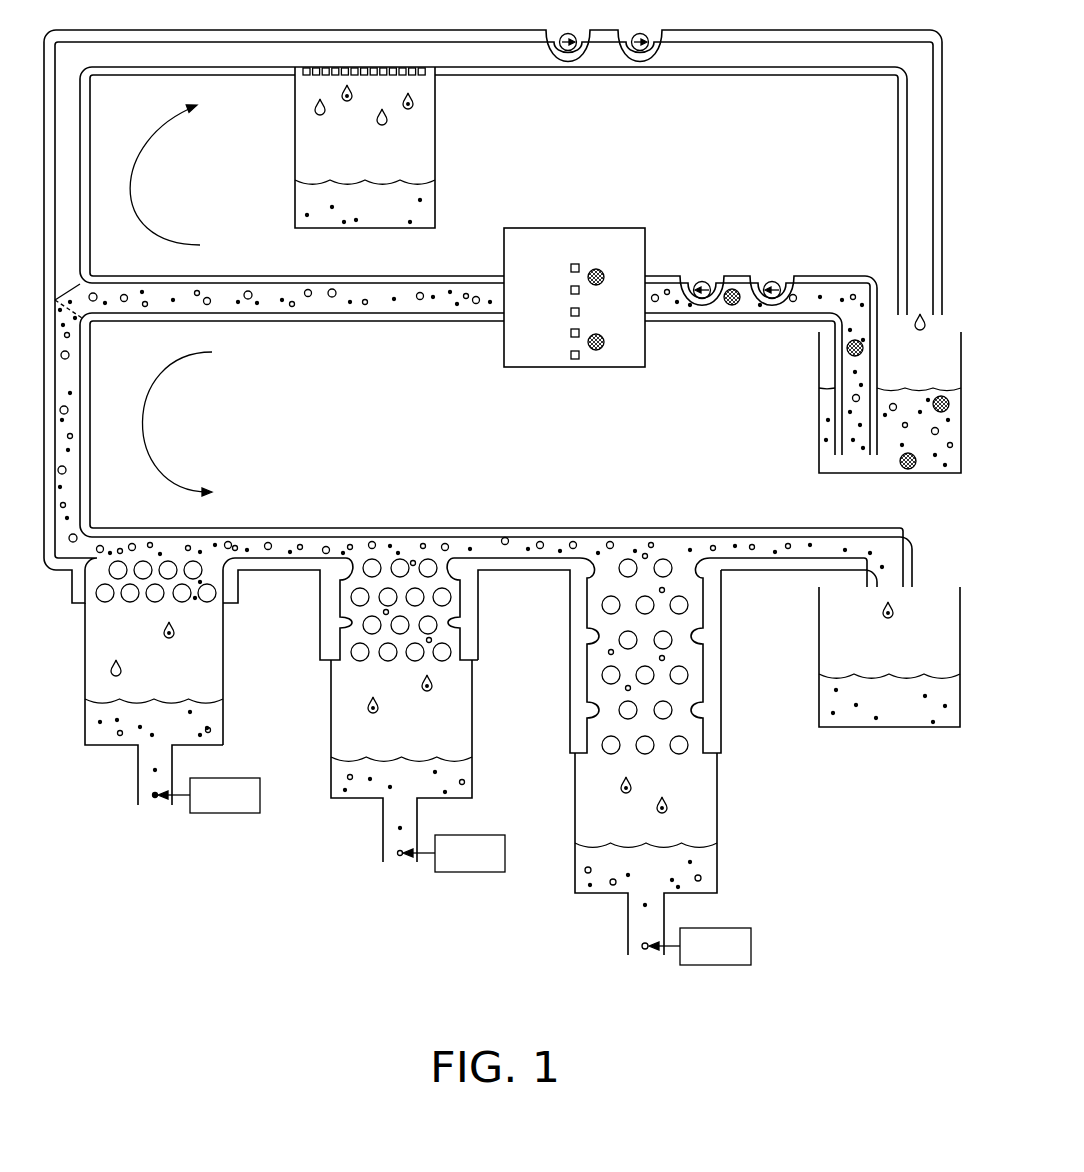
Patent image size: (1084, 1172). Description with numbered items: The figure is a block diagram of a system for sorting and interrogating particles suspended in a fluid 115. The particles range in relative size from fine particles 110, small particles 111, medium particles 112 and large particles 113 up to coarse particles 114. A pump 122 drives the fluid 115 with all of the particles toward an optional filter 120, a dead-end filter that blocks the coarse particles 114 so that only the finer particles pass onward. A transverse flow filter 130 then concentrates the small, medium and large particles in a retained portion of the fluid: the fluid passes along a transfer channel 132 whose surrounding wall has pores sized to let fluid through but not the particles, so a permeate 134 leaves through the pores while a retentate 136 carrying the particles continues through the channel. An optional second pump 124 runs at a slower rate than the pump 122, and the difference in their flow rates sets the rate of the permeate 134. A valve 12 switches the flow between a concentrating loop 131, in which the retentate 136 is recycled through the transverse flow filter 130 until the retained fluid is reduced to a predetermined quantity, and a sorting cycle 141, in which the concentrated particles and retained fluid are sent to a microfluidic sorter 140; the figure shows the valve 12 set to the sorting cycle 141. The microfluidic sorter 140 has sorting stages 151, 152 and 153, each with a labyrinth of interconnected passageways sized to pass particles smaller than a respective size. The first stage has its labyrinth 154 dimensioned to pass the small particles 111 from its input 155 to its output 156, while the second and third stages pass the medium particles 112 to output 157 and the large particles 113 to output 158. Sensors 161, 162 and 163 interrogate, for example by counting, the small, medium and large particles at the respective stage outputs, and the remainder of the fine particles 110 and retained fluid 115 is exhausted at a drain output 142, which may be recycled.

The valve 12 is at (78, 284).
The fine particles 110 is at (356, 216).
The small particles 111 is at (170, 728).
The medium particles 112 is at (430, 790).
The large particles 113 is at (666, 884).
The coarse particles 114 is at (598, 334).
The fluid 115 is at (924, 388).
The filter 120 is at (533, 228).
The pump 122 is at (742, 278).
The second pump 124 is at (612, 30).
The transverse flow filter 130 is at (294, 125).
The concentrating loop 131 is at (157, 119).
The transfer channel 132 is at (360, 68).
The permeate 134 is at (400, 180).
The retentate 136 is at (921, 334).
The microfluidic sorter 140 is at (126, 502).
The sorting cycle 141 is at (160, 378).
The drain output 142 is at (818, 622).
The sorting stage 151 is at (256, 624).
The sorting stage 152 is at (492, 622).
The sorting stage 153 is at (737, 621).
The labyrinth 154 is at (115, 613).
The input 155 is at (132, 556).
The output 156 is at (137, 788).
The output 157 is at (383, 848).
The output 158 is at (628, 938).
The sensor 161 is at (250, 778).
The sensor 162 is at (490, 835).
The sensor 163 is at (735, 928).